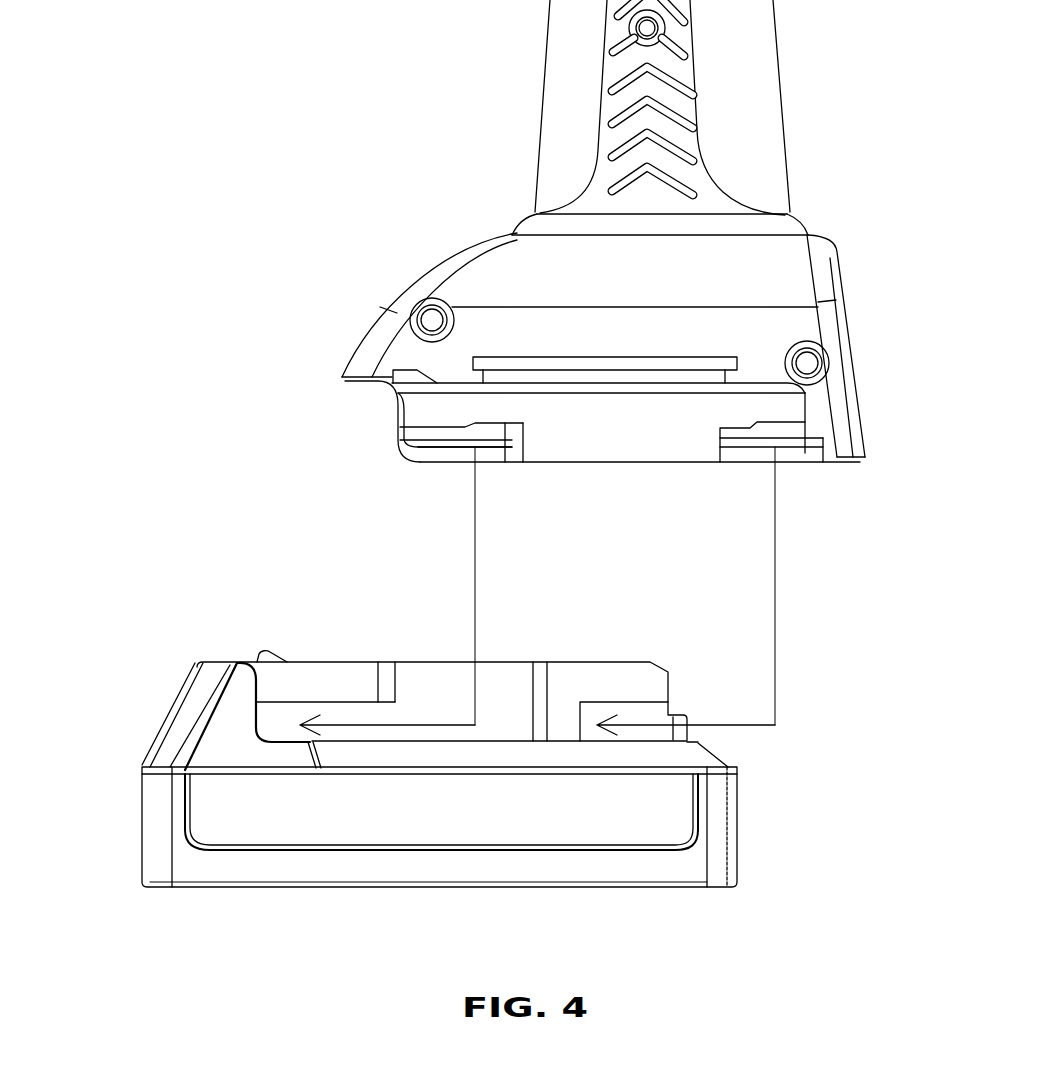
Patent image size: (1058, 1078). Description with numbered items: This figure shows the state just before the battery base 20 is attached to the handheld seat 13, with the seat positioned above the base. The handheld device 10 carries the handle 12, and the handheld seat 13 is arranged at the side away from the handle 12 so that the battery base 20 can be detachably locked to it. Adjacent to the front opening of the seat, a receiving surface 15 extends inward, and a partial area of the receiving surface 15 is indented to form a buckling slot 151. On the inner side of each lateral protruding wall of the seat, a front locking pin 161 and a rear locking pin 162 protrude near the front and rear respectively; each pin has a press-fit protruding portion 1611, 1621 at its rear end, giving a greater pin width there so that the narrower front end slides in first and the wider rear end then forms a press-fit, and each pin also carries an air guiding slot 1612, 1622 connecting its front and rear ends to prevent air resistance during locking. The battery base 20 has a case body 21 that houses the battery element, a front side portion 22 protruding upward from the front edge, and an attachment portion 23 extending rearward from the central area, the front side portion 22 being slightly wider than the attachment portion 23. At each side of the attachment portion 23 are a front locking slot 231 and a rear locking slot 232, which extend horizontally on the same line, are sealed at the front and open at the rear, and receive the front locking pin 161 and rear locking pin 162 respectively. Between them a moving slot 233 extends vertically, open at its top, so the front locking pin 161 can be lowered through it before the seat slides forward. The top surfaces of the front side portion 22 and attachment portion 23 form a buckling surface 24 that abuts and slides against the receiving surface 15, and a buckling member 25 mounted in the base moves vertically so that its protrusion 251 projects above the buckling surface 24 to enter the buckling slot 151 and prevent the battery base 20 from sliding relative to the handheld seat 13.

The power tool 10 is at (410, 73).
The handle 12 is at (560, 16).
The handheld seat 13 is at (836, 316).
The receiving surface 15 is at (357, 385).
The buckling slot 151 is at (408, 372).
The front locking pin 161 is at (408, 437).
The press-fit protruding portion 1611 is at (495, 430).
The air guiding slot 1612 is at (442, 446).
The rear locking pin 162 is at (797, 450).
The press-fit protruding portion 1621 is at (783, 430).
The air guiding slot 1622 is at (800, 440).
The battery base 20 is at (110, 787).
The case body 21 is at (240, 868).
The front side portion 22 is at (176, 731).
The attachment portion 23 is at (708, 732).
The front locking slot 231 is at (348, 715).
The rear locking slot 232 is at (636, 715).
The moving slot 233 is at (430, 683).
The buckling surface 24 is at (237, 662).
The buckling member 25 is at (270, 616).
The protrusion 251 is at (262, 652).